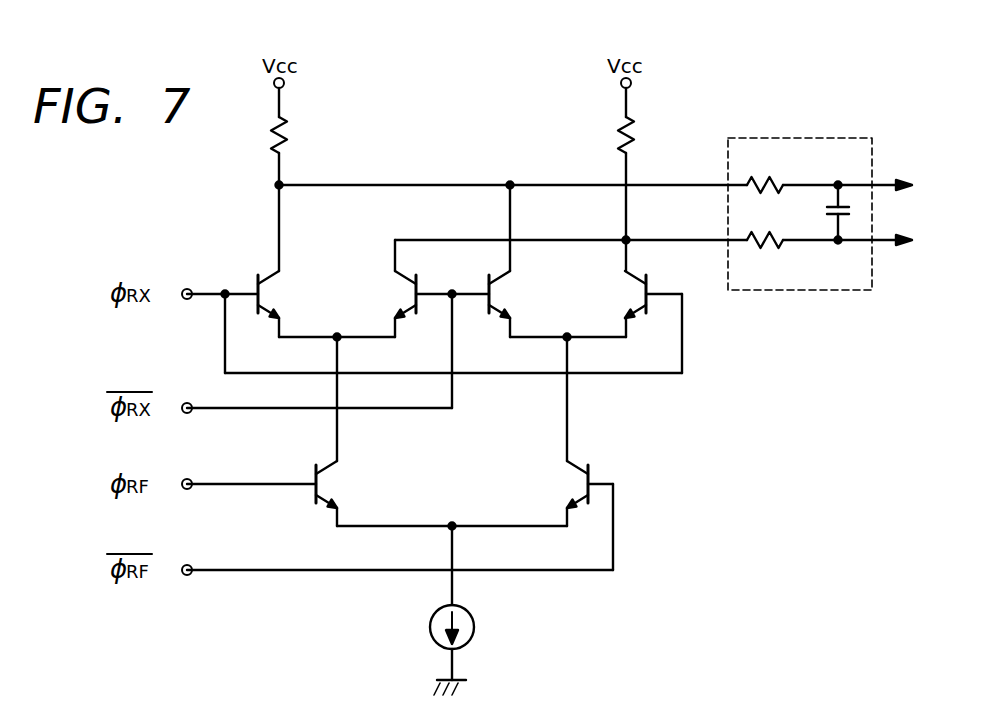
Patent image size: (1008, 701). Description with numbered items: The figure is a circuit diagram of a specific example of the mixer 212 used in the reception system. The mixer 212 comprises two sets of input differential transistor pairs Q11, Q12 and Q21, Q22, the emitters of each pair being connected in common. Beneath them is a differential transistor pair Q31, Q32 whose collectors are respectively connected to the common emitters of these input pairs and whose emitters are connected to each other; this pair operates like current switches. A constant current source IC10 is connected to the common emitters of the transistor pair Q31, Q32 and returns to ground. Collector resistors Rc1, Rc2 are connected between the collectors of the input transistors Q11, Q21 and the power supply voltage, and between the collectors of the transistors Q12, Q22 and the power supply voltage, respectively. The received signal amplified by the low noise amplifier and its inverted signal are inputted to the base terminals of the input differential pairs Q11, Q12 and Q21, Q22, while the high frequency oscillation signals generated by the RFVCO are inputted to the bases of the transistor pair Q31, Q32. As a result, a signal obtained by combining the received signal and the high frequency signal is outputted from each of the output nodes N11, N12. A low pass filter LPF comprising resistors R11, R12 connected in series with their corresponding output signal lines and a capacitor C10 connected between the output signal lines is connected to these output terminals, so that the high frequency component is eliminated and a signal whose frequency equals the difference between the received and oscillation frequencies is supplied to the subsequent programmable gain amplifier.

The input differential transistor Q11 is at (288, 294).
The input differential transistor Q12 is at (384, 294).
The input differential transistor Q21 is at (521, 294).
The input differential transistor Q22 is at (616, 294).
The current switch transistor Q31 is at (347, 484).
The current switch transistor Q32 is at (554, 484).
The collector resistor Rc1 is at (302, 135).
The collector resistor Rc2 is at (652, 135).
The resistor R11 is at (764, 169).
The resistor R12 is at (764, 257).
The capacitor C10 is at (816, 212).
The constant current source IC10 is at (479, 627).
The output node N11 is at (279, 185).
The output node N12 is at (626, 240).
The low pass filter LPF is at (820, 192).
The mixer 212 is at (766, 514).